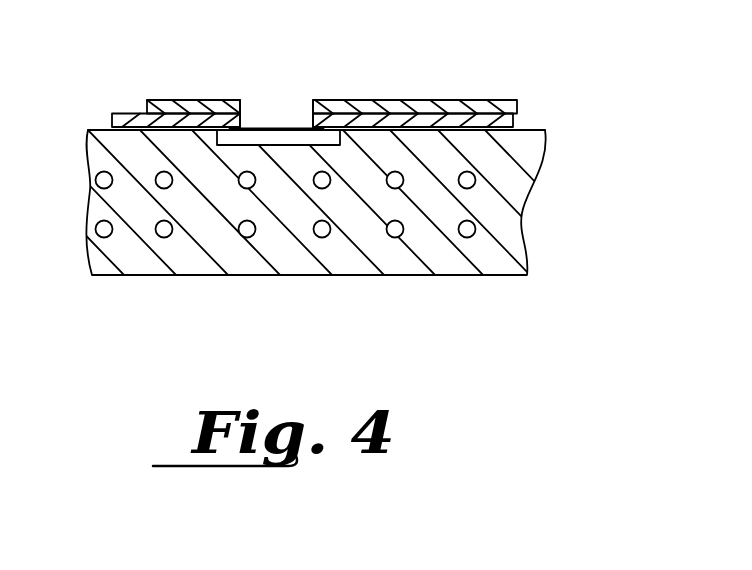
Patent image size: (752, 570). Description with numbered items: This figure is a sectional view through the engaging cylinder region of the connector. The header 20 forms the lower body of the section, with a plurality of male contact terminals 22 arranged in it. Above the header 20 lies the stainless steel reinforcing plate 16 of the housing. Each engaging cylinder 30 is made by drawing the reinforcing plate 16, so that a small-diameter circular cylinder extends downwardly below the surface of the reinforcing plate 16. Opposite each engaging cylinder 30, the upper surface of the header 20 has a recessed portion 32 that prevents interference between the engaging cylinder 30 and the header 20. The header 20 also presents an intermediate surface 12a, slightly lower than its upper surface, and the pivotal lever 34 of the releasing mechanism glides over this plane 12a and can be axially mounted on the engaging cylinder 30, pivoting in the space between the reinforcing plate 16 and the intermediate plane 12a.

The intermediate surface 12a is at (100, 125).
The reinforcing plate 16 is at (222, 100).
The header 20 is at (375, 280).
The male contact terminals 22 is at (470, 181).
The engaging cylinder 30 is at (247, 122).
The recessed portion 32 is at (288, 146).
The pivotal lever 34 is at (122, 122).